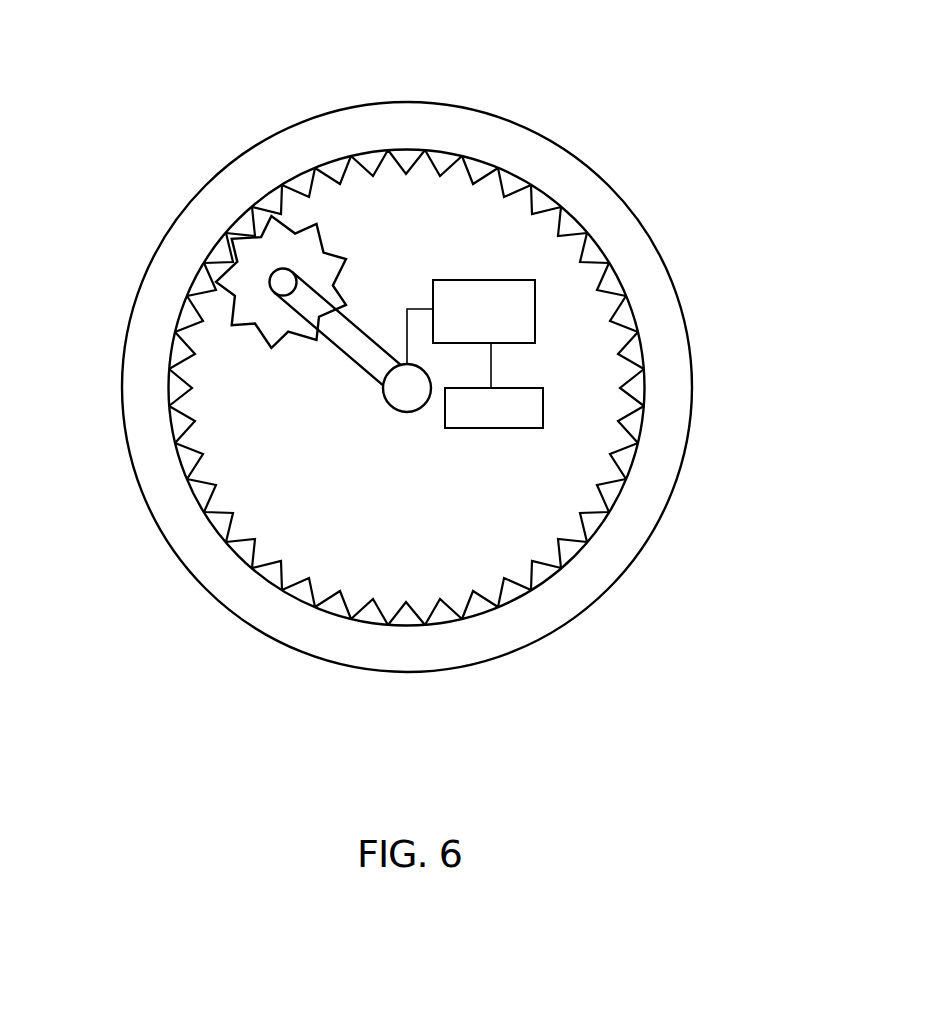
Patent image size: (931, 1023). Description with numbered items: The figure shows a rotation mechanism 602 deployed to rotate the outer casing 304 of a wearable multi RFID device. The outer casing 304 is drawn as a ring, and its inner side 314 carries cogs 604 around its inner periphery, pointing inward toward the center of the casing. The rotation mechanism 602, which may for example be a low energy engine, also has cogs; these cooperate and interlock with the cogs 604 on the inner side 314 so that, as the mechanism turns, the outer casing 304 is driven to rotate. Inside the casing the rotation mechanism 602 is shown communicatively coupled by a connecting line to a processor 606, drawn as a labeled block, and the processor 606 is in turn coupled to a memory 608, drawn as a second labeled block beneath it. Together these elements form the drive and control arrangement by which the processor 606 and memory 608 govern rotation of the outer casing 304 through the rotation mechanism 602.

The outer casing 304 is at (219, 114).
The inner side 314 is at (172, 352).
The cogs 604 is at (218, 528).
The rotation mechanism 602 is at (371, 249).
The processor 606 is at (535, 308).
The memory 608 is at (543, 402).